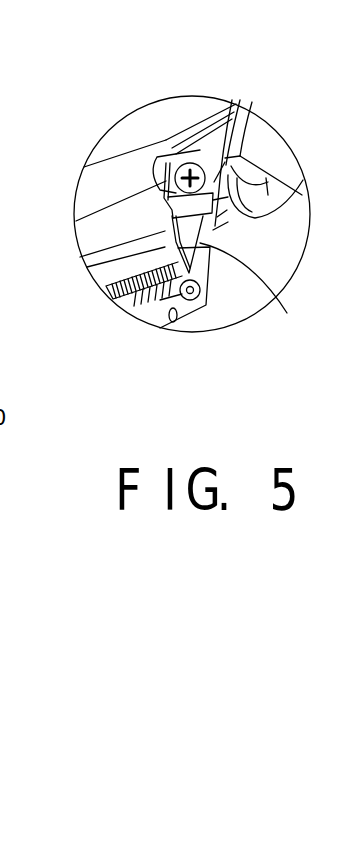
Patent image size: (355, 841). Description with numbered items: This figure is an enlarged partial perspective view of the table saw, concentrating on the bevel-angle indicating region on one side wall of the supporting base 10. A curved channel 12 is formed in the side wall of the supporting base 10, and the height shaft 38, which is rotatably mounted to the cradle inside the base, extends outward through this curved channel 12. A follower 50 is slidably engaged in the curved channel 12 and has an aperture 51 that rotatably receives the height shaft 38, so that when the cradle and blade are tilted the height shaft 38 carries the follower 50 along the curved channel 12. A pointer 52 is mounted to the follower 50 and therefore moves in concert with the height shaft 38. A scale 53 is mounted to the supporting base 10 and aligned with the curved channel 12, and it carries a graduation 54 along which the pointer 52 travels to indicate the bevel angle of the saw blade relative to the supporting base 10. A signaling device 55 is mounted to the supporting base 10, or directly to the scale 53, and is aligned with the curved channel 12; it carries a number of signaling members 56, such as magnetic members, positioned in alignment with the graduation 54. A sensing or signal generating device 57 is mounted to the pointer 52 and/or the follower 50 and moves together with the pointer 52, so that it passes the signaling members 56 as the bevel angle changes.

The supporting base 10 is at (127, 133).
The curved channel 12 is at (105, 170).
The height shaft 38 is at (277, 145).
The follower 50 is at (212, 140).
The aperture 51 is at (265, 182).
The pointer 52 is at (283, 306).
The scale 53 is at (206, 305).
The graduation 54 is at (159, 318).
The signaling device 55 is at (158, 308).
The signaling members 56 is at (113, 303).
The signal generating device 57 is at (160, 248).